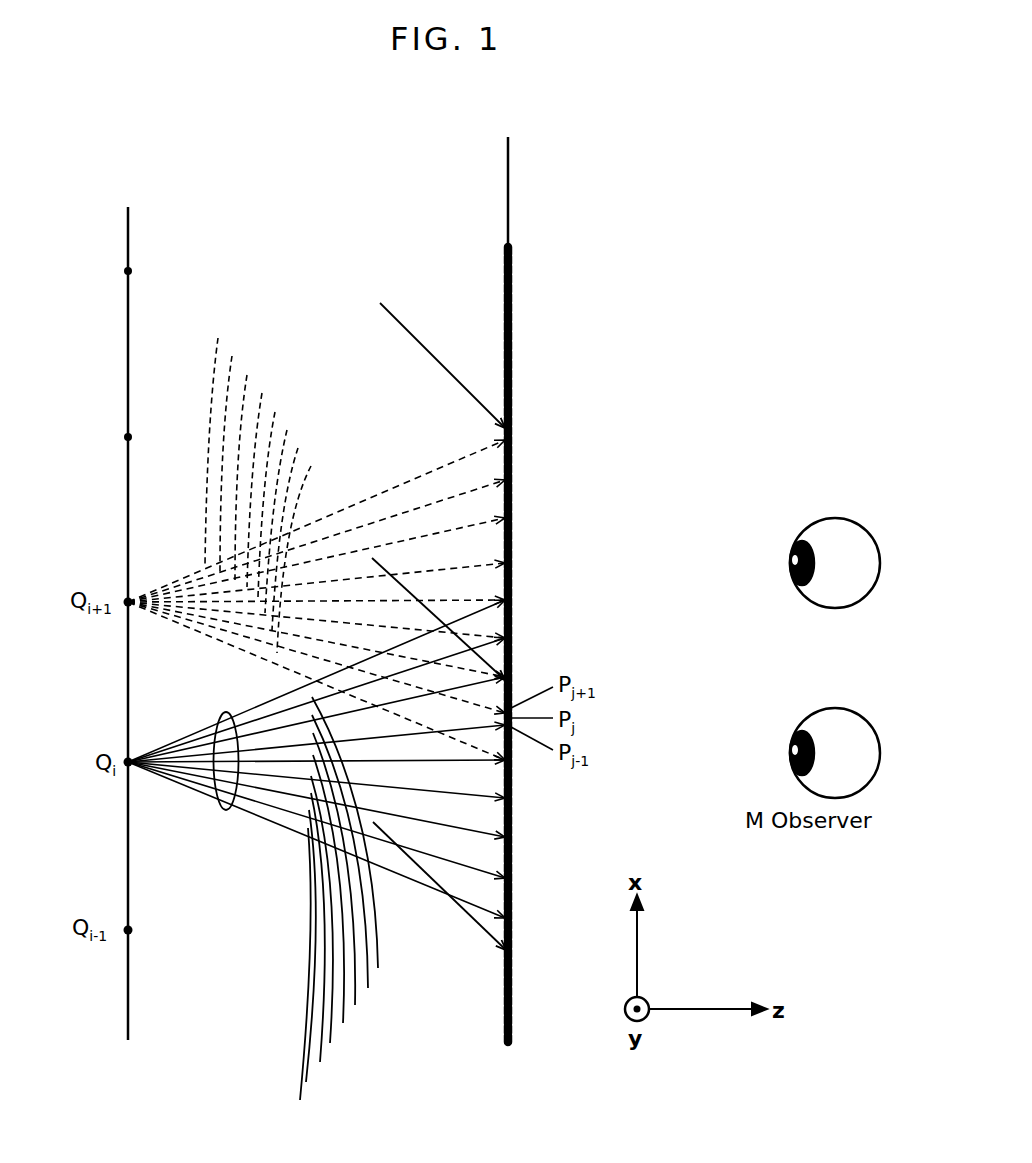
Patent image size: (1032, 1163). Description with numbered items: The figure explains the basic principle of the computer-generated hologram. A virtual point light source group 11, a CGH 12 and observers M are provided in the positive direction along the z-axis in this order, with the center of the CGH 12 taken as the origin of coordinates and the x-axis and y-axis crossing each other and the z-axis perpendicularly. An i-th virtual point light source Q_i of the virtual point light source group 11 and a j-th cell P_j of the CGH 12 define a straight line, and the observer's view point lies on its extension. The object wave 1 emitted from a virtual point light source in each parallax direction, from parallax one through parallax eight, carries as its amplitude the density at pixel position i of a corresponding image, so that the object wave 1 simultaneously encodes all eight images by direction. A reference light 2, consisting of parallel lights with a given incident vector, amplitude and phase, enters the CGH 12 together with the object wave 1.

The object wave 1 is at (222, 817).
The reference light 2 is at (386, 312).
The virtual point light source group 11 is at (112, 651).
The CGH 12 is at (500, 607).